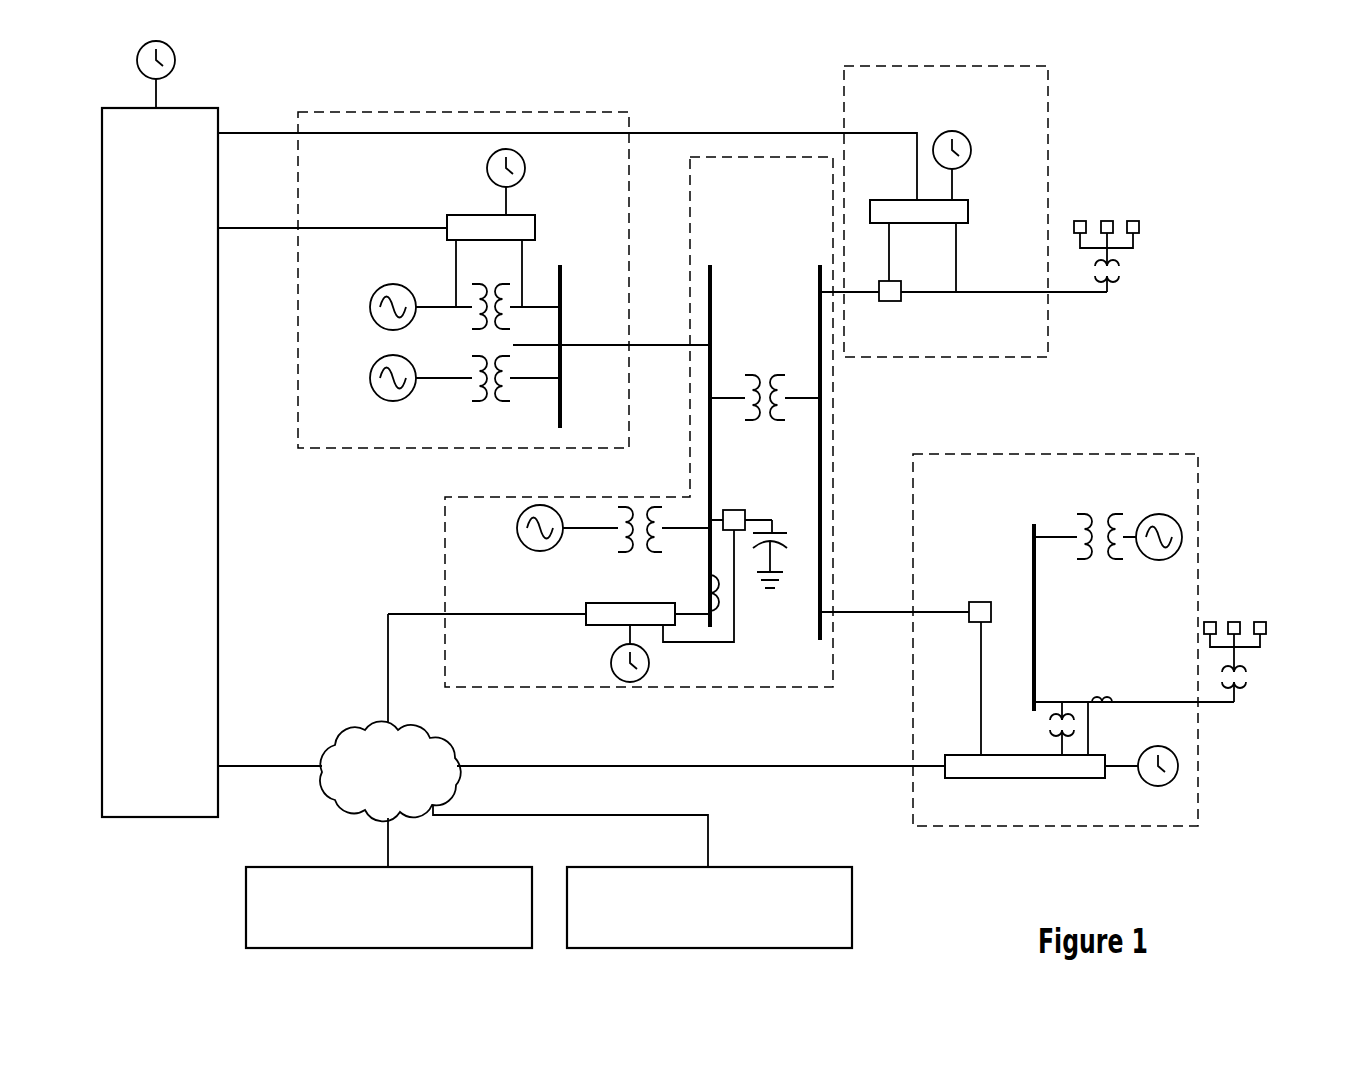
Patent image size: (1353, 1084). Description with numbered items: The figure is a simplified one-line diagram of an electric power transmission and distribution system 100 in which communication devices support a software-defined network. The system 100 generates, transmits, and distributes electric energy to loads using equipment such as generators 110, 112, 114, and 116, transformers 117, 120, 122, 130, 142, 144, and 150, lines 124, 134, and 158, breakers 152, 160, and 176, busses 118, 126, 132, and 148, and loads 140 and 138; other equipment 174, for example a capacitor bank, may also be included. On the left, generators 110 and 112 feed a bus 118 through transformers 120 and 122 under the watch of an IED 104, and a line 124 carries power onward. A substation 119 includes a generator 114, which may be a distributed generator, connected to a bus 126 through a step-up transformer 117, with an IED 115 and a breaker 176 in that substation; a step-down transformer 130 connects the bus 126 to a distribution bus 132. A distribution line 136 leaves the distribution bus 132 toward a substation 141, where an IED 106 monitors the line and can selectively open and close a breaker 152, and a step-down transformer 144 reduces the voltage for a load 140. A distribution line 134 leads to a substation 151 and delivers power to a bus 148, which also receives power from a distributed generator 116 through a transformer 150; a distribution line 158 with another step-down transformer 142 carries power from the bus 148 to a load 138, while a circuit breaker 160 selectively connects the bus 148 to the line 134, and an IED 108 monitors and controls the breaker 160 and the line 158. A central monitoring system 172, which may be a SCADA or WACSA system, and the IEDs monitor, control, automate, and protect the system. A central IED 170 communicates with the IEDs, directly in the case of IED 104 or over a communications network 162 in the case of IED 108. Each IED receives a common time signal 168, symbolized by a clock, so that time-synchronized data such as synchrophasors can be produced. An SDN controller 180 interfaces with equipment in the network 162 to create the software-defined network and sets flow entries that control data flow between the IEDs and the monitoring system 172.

The electric power delivery system 100 is at (1187, 133).
The IED 104 is at (468, 214).
The IED 106 is at (889, 198).
The IED 108 is at (1073, 779).
The generator 110 is at (370, 303).
The generator 112 is at (370, 374).
The generator 114 is at (517, 523).
The IED 115 is at (660, 603).
The distributed generator 116 is at (1147, 559).
The step-up transformer 117 is at (622, 542).
The bus 118 is at (562, 402).
The substation 119 is at (568, 688).
The transformer 120 is at (468, 322).
The transformer 122 is at (490, 404).
The transmission line 124 is at (645, 347).
The bus 126 is at (712, 420).
The step-down transformer 130 is at (773, 376).
The distribution bus 132 is at (819, 598).
The distribution line 134 is at (925, 614).
The distribution line 136 is at (860, 294).
The load 138 is at (1236, 621).
The load 140 is at (1150, 222).
The substation 141 is at (1020, 358).
The step-down transformer 142 is at (1247, 688).
The step-down transformer 144 is at (1122, 268).
The bus 148 is at (1032, 523).
The transformer 150 is at (1095, 519).
The substation 151 is at (1128, 827).
The breaker 152 is at (901, 302).
The distribution line 158 is at (1130, 700).
The circuit breaker 160 is at (980, 602).
The network 162 is at (390, 771).
The common time signal 168 is at (175, 60).
The central IED 170 is at (160, 462).
The central monitoring system 172 is at (389, 907).
The capacitor bank 174 is at (802, 522).
The breaker 176 is at (736, 510).
The SDN controller 180 is at (709, 907).